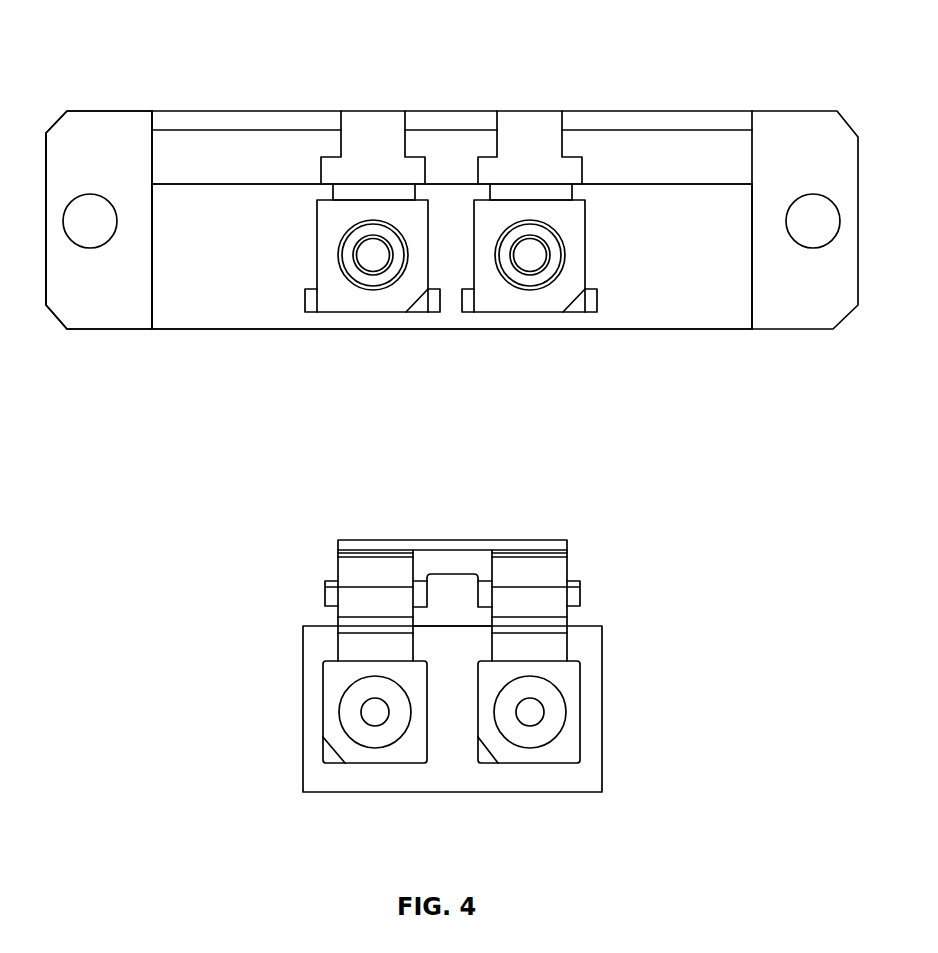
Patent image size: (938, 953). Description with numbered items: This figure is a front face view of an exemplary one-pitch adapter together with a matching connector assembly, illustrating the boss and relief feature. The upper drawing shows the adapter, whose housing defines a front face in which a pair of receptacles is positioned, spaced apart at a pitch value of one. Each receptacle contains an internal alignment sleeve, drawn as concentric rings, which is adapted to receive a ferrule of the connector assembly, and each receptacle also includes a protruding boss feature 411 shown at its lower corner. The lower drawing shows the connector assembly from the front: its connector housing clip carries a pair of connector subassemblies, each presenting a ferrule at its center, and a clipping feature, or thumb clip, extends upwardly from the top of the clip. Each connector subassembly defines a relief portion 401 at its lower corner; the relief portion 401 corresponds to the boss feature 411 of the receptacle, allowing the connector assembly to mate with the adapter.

The protruding boss feature 411 is at (420, 303).
The relief portion 401 is at (333, 758).